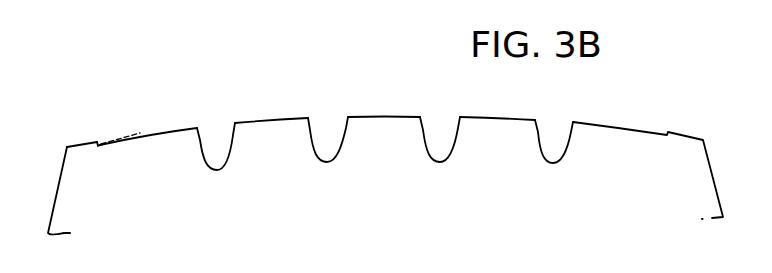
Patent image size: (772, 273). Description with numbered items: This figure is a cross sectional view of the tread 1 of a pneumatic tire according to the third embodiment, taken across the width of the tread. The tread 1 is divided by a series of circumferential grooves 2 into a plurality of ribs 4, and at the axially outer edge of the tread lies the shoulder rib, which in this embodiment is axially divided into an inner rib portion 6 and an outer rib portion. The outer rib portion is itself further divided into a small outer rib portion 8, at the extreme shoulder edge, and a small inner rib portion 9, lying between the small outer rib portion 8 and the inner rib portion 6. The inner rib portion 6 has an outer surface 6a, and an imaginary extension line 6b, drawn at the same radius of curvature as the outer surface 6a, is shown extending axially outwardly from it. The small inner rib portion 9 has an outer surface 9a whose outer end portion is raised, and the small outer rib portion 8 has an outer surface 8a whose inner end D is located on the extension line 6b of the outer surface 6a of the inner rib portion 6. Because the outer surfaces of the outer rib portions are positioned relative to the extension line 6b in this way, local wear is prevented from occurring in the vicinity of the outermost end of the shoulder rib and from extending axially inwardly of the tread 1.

The tread 1 is at (628, 105).
The circumferential groove 2 is at (216, 167).
The rib 4 is at (271, 119).
The inner rib portion 6 is at (136, 129).
The outer surface of the inner rib portion 6a is at (160, 134).
The extension line of the outer surface 6b is at (79, 144).
The small outer rib portion 8 is at (73, 147).
The outer surface of the small outer rib portion 8a is at (77, 144).
The small inner rib portion 9 is at (119, 143).
The outer surface of the small inner rib portion 9a is at (118, 139).
The inner end of the outer surface D is at (98, 147).